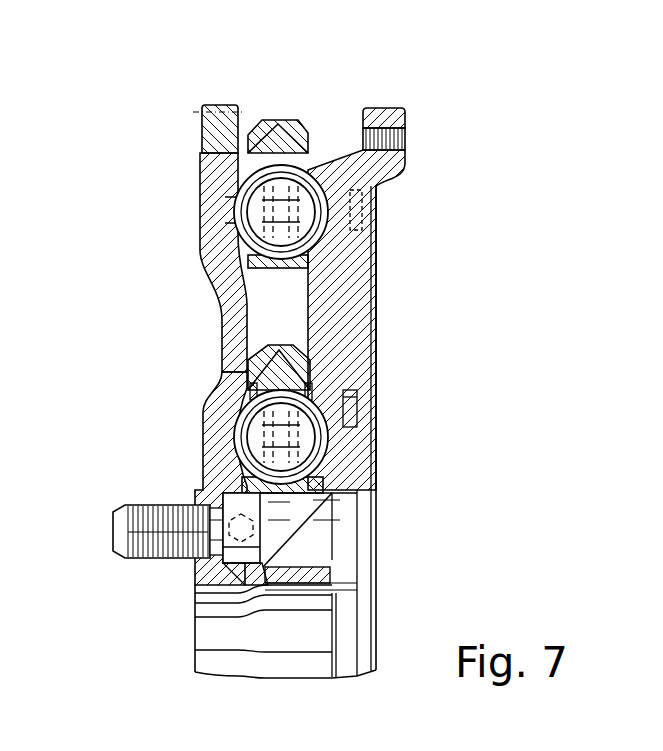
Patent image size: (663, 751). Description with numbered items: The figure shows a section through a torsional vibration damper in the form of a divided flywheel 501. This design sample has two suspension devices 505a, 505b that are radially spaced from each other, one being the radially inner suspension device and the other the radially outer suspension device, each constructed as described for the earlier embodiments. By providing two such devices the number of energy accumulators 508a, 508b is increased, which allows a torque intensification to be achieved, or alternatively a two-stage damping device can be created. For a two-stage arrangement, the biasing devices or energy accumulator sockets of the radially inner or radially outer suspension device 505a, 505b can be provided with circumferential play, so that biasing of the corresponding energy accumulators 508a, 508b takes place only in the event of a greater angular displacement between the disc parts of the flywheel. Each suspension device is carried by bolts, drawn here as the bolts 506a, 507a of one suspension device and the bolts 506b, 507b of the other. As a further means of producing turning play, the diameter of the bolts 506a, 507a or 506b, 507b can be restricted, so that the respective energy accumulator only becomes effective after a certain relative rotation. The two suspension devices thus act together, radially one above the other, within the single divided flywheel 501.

The divided flywheel 501 is at (350, 352).
The radially inner suspension device 505a is at (312, 342).
The radially outer suspension device 505b is at (344, 103).
The bolt 506a is at (320, 225).
The bolt 506b is at (305, 400).
The bolt 507a is at (203, 253).
The bolt 507b is at (220, 389).
The energy accumulator 508a is at (322, 437).
The energy accumulator 508b is at (312, 208).